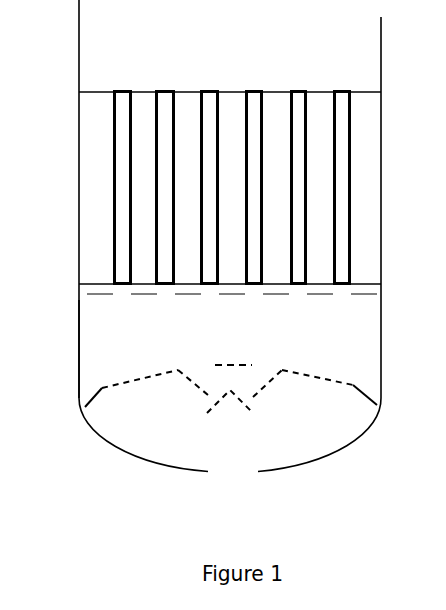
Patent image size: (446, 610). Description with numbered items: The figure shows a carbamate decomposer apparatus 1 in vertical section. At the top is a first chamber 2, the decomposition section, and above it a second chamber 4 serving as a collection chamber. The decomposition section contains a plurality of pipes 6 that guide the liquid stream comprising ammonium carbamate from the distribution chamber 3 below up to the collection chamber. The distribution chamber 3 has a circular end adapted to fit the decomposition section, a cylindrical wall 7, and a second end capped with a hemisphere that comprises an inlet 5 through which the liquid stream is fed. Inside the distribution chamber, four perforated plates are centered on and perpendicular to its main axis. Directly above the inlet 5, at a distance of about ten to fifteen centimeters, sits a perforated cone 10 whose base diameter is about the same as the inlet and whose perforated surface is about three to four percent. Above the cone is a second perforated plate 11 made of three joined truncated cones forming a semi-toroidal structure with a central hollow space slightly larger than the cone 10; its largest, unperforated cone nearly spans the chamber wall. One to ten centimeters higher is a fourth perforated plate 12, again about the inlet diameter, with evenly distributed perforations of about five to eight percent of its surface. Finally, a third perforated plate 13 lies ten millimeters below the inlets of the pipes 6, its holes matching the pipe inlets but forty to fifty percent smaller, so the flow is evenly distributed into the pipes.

The carbamate decomposer apparatus 1 is at (212, 236).
The first chamber 2 is at (230, 213).
The distribution chamber 3 is at (146, 370).
The second chamber 4 is at (230, 49).
The inlet 5 is at (239, 487).
The pipes 6 is at (232, 188).
The cylindrical wall 7 is at (70, 349).
The perforated cone 10 is at (242, 416).
The second perforated plate 11 is at (315, 380).
The fourth perforated plate 12 is at (233, 350).
The third perforated plate 13 is at (232, 310).